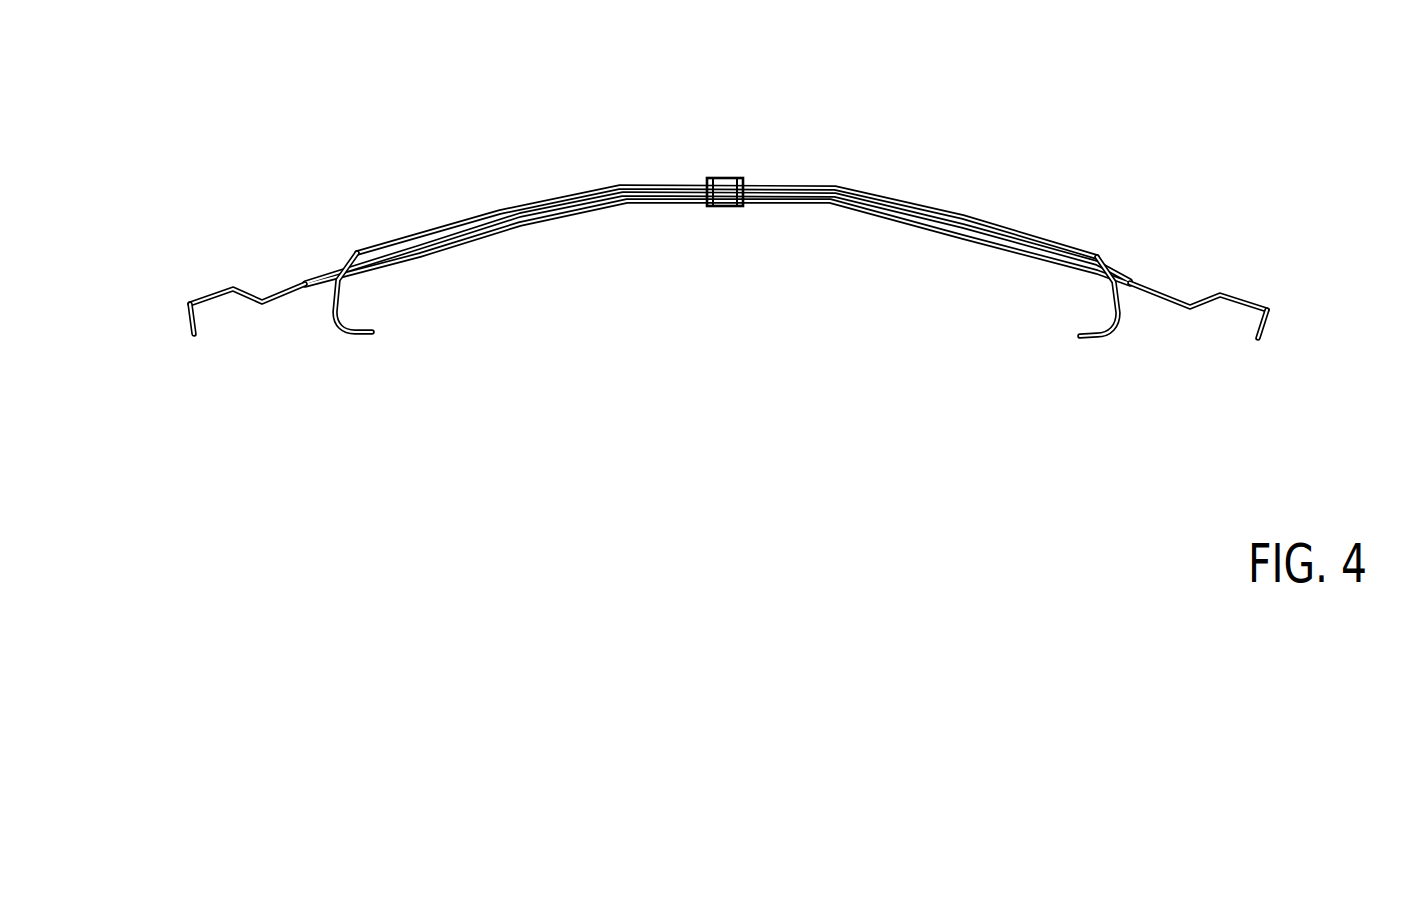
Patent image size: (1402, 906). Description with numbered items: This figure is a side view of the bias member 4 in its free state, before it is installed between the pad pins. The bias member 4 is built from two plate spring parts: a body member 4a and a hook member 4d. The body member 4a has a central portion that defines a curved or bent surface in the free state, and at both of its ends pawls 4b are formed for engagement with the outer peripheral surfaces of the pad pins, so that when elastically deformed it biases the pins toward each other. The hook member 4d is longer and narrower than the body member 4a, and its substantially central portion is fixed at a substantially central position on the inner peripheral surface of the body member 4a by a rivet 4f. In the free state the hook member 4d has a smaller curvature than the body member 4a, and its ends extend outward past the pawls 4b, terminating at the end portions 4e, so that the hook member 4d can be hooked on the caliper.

The bias member 4 is at (718, 285).
The body member 4a is at (560, 197).
The pawls 4b is at (338, 328).
The hook member 4d is at (297, 283).
The end stub 4e is at (190, 320).
The rivet 4f is at (737, 178).